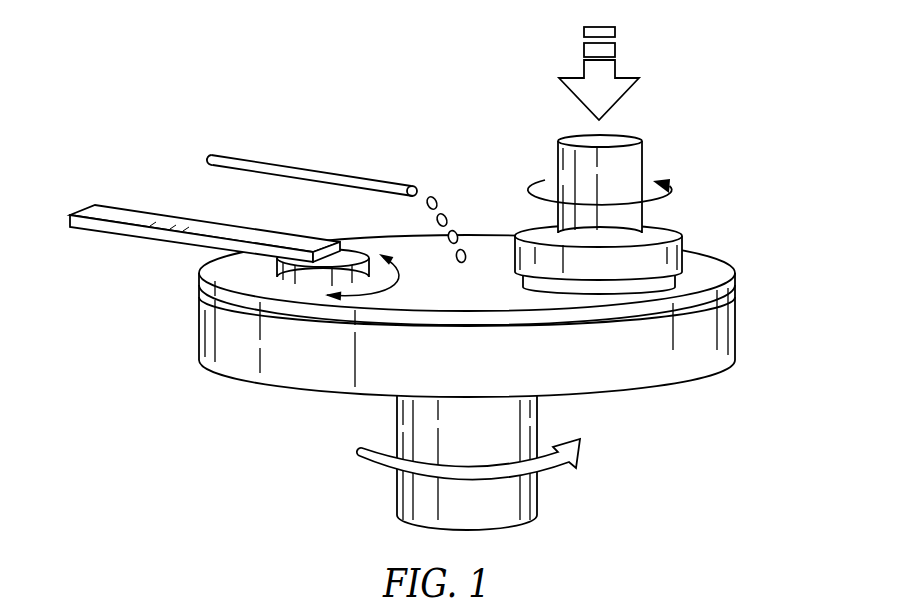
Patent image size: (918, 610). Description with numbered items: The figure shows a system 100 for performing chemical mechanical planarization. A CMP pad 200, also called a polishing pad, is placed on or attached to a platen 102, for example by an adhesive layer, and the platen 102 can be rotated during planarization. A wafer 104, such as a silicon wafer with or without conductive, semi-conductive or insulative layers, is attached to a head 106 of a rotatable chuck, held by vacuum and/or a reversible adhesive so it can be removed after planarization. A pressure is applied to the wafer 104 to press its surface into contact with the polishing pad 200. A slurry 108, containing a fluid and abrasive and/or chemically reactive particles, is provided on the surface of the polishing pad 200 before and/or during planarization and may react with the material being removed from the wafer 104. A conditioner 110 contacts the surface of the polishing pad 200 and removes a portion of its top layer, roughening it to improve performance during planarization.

The system 100 is at (297, 39).
The platen 102 is at (663, 375).
The wafer 104 is at (737, 267).
The head 106 is at (684, 238).
The slurry 108 is at (208, 157).
The conditioner 110 is at (198, 277).
The CMP pad 200 is at (483, 250).